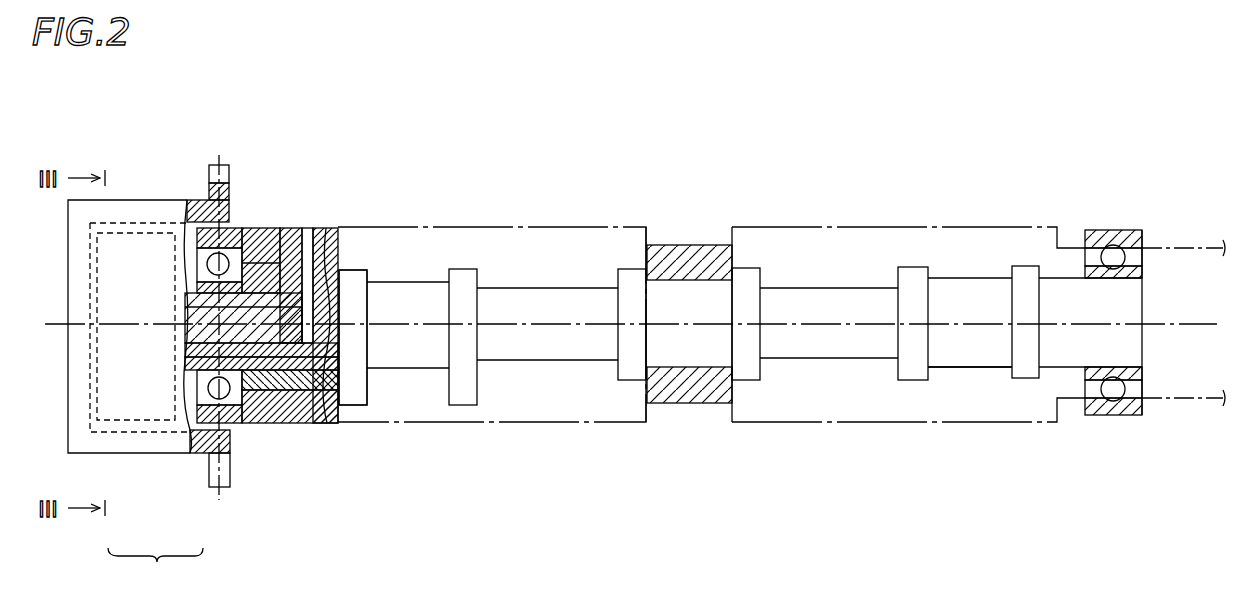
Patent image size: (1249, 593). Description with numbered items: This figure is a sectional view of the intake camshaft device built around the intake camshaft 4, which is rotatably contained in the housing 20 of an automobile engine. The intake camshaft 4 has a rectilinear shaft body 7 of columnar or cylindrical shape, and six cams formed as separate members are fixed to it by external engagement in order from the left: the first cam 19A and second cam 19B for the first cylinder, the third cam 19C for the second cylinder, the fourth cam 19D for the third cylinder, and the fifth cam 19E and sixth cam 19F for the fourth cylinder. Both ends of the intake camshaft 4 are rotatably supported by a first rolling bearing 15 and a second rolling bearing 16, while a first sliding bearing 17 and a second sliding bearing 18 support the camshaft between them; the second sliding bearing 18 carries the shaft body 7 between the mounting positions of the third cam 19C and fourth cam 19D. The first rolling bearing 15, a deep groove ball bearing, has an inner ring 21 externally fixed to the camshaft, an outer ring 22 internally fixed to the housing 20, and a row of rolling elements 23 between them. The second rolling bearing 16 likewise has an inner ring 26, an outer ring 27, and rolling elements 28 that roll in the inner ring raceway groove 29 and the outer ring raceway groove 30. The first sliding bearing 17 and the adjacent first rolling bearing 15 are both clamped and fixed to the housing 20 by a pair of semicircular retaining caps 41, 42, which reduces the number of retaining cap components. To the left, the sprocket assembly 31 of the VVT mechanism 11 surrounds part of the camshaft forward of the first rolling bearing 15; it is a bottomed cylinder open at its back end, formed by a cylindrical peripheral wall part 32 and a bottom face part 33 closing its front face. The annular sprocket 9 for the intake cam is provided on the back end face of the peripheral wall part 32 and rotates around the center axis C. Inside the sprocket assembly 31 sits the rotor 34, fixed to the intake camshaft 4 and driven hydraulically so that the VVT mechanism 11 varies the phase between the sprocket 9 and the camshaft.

The VVT mechanism 11 is at (149, 345).
The bottom face part 33 is at (75, 402).
The peripheral wall part 32 is at (137, 434).
The rotor 34 is at (138, 224).
The sprocket assembly 31 is at (155, 568).
The sprocket for the intake cam 9 is at (207, 192).
The first rolling bearing 15 is at (236, 400).
The outer ring 22 is at (200, 259).
The rolling elements 23 is at (228, 258).
The inner ring 21 is at (196, 281).
The retaining cap 41 is at (324, 245).
The retaining cap 42 is at (318, 408).
The first sliding bearing 17 is at (351, 268).
The first cam 19A is at (360, 282).
The second cam 19B is at (466, 278).
The third cam 19C is at (632, 278).
The fourth cam 19D is at (748, 278).
The fifth cam 19E is at (915, 278).
The sixth cam 19F is at (1025, 278).
The second sliding bearing 18 is at (697, 250).
The housing 20 is at (830, 225).
The intake camshaft 4 is at (960, 270).
The shaft body 7 is at (958, 357).
The second rolling bearing 16 is at (1155, 317).
The outer ring raceway groove 30 is at (1115, 242).
The inner ring raceway groove 29 is at (1122, 258).
The inner ring 26 is at (1115, 372).
The rolling elements 28 is at (1122, 391).
The outer ring 27 is at (1125, 416).
The center axis C is at (1190, 324).